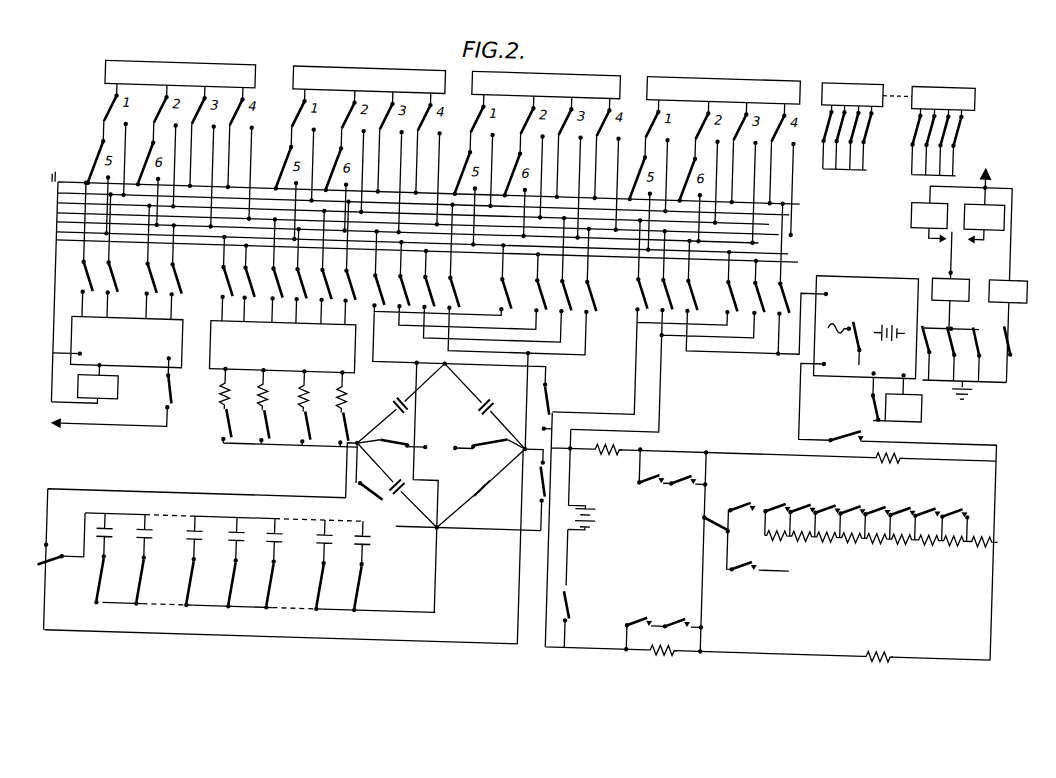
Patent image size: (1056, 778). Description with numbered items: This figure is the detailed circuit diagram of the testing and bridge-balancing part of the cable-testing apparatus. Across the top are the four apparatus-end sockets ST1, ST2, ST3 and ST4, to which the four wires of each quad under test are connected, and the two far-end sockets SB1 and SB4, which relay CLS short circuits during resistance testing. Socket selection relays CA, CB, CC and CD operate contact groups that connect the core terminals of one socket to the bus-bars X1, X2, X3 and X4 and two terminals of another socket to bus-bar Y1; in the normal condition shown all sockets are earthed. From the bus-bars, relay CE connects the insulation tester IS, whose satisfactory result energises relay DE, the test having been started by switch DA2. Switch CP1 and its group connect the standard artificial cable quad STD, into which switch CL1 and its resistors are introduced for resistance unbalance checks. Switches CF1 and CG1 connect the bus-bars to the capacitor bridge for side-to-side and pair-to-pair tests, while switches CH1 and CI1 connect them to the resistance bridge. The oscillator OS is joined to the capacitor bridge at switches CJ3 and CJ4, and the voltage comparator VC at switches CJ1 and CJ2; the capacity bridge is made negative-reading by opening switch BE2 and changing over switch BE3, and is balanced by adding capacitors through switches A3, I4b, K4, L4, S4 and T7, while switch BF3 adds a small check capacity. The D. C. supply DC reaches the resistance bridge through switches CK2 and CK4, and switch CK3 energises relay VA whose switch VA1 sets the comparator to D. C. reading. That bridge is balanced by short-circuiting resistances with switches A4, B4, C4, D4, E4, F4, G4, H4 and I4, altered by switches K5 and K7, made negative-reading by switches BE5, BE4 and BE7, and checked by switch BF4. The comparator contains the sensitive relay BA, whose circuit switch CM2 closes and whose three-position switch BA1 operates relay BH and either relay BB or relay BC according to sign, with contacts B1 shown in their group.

The test socket ST1 is at (170, 150).
The test socket ST2 is at (358, 155).
The test socket ST3 is at (537, 161).
The test socket ST4 is at (713, 166).
The socket selection relay CA is at (265, 136).
The socket selection relay CB is at (446, 141).
The socket selection relay CC is at (265, 135).
The socket selection relay CD is at (447, 141).
The bus-bar X1 is at (413, 297).
The bus-bar X2 is at (405, 213).
The bus-bar X3 is at (405, 223).
The bus-bar X4 is at (400, 232).
The bus-bar Y1 is at (415, 247).
The far-end socket SB1 is at (852, 127).
The far-end socket SB4 is at (928, 131).
The short-circuiting relay CLS is at (885, 137).
The negative-sign relay BB is at (962, 205).
The positive-sign relay BC is at (985, 215).
The three-position switch BA1 is at (937, 255).
The relay BH is at (952, 305).
The relay VA is at (1008, 285).
The switch CK3 is at (1020, 342).
The contacts B1 BB BC B1 is at (964, 363).
The voltage comparator VC is at (866, 327).
The switch VA1 is at (879, 360).
The three-position sensitive relay BA is at (897, 400).
The switch CM2 is at (856, 399).
The switch CK4 is at (895, 511).
The D. C. supply DC is at (771, 539).
The switch CK2 is at (581, 602).
The switch K5 is at (640, 473).
The switch BE4 is at (684, 473).
The switch BE5 is at (703, 552).
The switch A4 is at (741, 500).
The switch B4 is at (776, 512).
The switch C4 is at (801, 513).
The switch D4 is at (826, 514).
The switch E4 is at (851, 514).
The switch F4 is at (876, 515).
The switch G4 is at (901, 516).
The switch H4 is at (926, 517).
The switch I4 is at (882, 517).
The switch BF4 is at (758, 563).
The switch K7 is at (637, 625).
The switch BE7 is at (677, 614).
The insulation tester IS is at (118, 342).
The standard artificial cable quad STD is at (282, 347).
The relay CE is at (120, 250).
The switch CP1 is at (274, 260).
The switch CF1 is at (468, 325).
The switch CG1 is at (531, 263).
The switch CH1 is at (690, 326).
The switch CI1 is at (744, 257).
The switch CL1 is at (277, 406).
The relay DE is at (84, 383).
The switch DA2 is at (112, 392).
The oscillator OS is at (440, 487).
The switch CJ1 is at (558, 406).
The switch CJ2 is at (483, 480).
The switch CJ3 is at (392, 452).
The switch CJ4 is at (488, 453).
The switch BE2 is at (359, 478).
The switch BE3 is at (266, 538).
The switch T7 is at (113, 567).
The switch S4 is at (160, 568).
The switch L4 is at (228, 569).
The switch K4 is at (233, 569).
The switch I4 I4b is at (311, 570).
The switch A3 is at (368, 571).
The switch BF3 is at (357, 571).